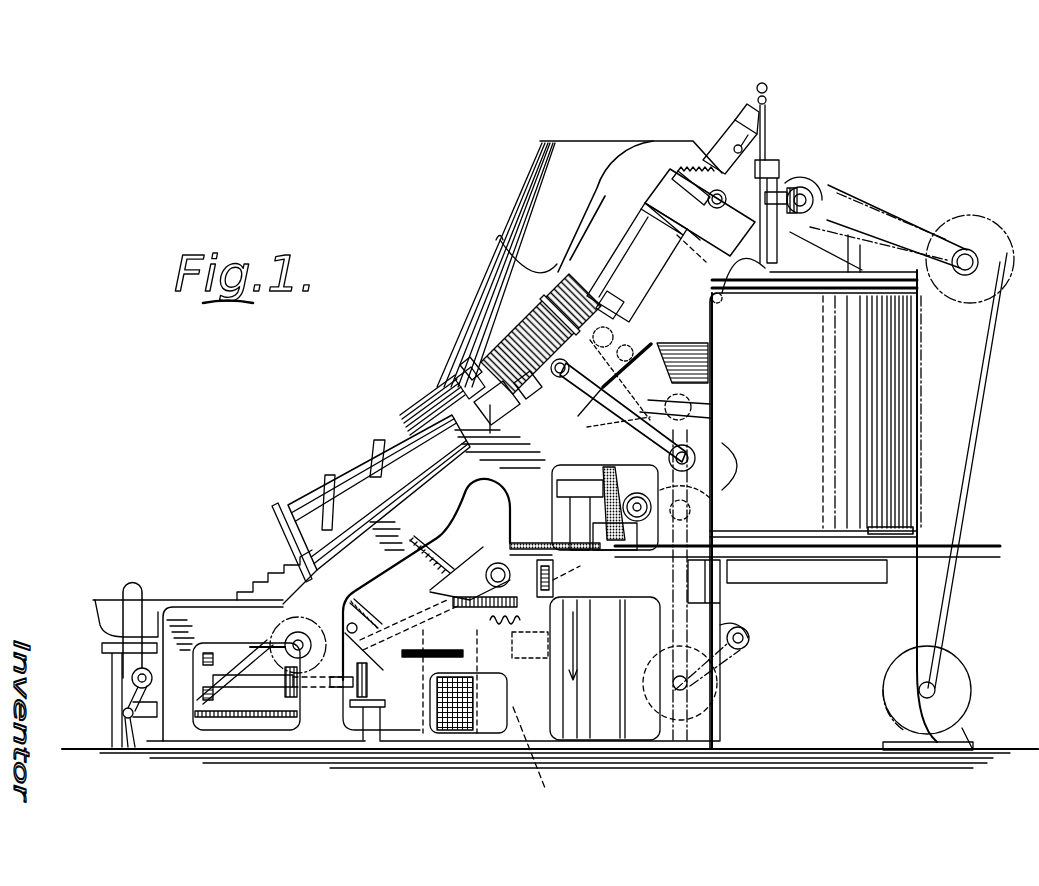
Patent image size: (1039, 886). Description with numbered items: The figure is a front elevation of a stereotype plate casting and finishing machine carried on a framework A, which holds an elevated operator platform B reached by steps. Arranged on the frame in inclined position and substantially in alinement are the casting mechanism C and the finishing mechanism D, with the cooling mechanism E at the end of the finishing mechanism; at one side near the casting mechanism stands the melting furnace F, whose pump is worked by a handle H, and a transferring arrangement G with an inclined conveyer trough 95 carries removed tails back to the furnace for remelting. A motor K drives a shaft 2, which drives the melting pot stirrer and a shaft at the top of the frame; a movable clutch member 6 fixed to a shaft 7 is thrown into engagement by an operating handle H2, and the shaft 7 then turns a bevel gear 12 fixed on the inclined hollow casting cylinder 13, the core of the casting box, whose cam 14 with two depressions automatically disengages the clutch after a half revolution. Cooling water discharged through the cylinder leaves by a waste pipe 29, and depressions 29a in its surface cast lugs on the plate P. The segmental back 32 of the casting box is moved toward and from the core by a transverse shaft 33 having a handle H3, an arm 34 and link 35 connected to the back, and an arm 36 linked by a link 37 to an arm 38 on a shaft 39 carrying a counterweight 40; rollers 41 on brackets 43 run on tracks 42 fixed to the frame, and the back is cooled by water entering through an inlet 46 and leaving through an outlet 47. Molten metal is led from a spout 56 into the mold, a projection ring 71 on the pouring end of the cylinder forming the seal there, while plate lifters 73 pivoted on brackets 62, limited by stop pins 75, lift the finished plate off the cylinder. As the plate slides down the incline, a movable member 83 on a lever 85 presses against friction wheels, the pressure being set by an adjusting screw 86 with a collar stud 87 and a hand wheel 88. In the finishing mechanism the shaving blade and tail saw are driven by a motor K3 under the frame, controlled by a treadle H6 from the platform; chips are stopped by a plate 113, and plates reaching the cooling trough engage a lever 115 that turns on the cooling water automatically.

The shaft 2 is at (808, 192).
The longitudinally movable clutch member 6 is at (406, 649).
The shaft 7 is at (700, 215).
The bevel gear 12 is at (735, 128).
The casting cylinder 13 is at (700, 196).
The cam 14 is at (676, 186).
The waste pipe 29 is at (575, 521).
The depressions 29a is at (645, 251).
The back of the casting box 32 is at (652, 347).
The transverse shaft 33 is at (698, 465).
The arm 34 is at (640, 444).
The link 35 is at (704, 366).
The arm 36 is at (713, 501).
The link 37 is at (680, 581).
The arm 38 is at (706, 679).
The shaft 39 is at (750, 642).
The counterweight 40 is at (640, 730).
The rollers 41 is at (708, 418).
The guides or tracks 42 is at (745, 443).
The brackets 43 is at (735, 383).
The inlet 46 is at (590, 478).
The outlet 47 is at (720, 301).
The spout 56 is at (765, 270).
The bracket 62 is at (526, 395).
The projection ring 71 is at (701, 241).
The plate lifters 73 is at (553, 310).
The stop pin 75 is at (528, 367).
The movable member 83 is at (468, 366).
The lever 85 is at (467, 394).
The adjusting screw 86 is at (505, 421).
The collar stud 87 is at (498, 434).
The hand wheel 88 is at (473, 410).
The inclined conveyer trough 95 is at (553, 218).
The plate 113 is at (278, 538).
The lever 115 is at (172, 562).
The framework A is at (714, 396).
The platform B is at (792, 550).
The casting mechanism C is at (637, 262).
The finishing mechanism D is at (352, 448).
The cooling mechanism E is at (202, 648).
The melting furnace F is at (893, 384).
The tail transferring arrangement G is at (480, 279).
The handle H is at (768, 128).
The operating handle H2 is at (745, 137).
The handle H3 is at (575, 372).
The lever or treadle H6 is at (567, 578).
The motor K is at (950, 673).
The motor K3 is at (533, 761).
The cast plate P is at (421, 416).